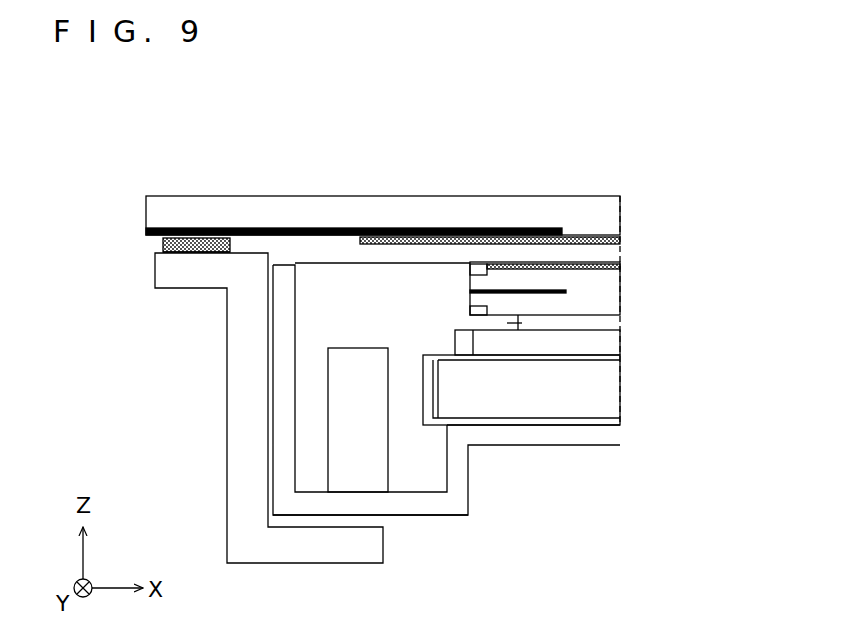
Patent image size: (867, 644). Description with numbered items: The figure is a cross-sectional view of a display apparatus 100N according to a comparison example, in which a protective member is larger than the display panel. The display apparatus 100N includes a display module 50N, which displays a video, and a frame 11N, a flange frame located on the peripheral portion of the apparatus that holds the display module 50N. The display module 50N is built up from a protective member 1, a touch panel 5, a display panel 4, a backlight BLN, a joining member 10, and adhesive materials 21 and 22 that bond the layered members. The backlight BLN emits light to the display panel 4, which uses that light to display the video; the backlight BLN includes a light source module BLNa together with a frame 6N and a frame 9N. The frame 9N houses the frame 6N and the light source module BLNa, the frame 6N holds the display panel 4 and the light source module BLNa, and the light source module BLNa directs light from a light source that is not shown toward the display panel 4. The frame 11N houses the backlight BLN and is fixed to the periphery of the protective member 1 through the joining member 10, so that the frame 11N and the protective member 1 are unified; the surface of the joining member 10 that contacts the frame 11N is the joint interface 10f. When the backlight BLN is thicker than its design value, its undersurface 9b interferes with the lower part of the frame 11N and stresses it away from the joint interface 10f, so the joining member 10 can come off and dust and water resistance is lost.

The display apparatus 100N is at (650, 122).
The display module 50N is at (757, 167).
The protective member 1 is at (620, 203).
The adhesive material 21 is at (620, 240).
The touch panel 5 is at (617, 255).
The adhesive material 22 is at (620, 266).
The display panel 4 is at (622, 270).
The backlight BLN is at (700, 312).
The light source module BLNa is at (632, 330).
The frame 6N is at (520, 323).
The frame 9N is at (600, 438).
The undersurface 9b is at (440, 519).
The joining member 10 is at (163, 242).
The joint interface 10f is at (196, 258).
The frame 11N is at (153, 289).